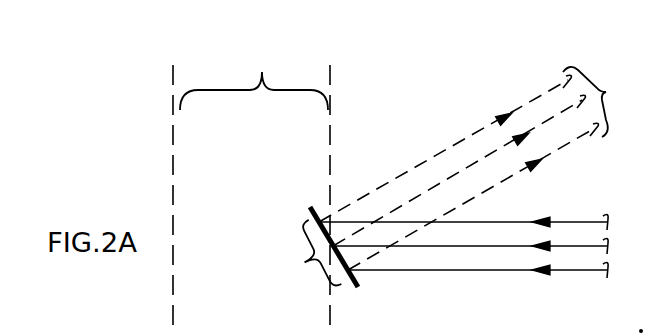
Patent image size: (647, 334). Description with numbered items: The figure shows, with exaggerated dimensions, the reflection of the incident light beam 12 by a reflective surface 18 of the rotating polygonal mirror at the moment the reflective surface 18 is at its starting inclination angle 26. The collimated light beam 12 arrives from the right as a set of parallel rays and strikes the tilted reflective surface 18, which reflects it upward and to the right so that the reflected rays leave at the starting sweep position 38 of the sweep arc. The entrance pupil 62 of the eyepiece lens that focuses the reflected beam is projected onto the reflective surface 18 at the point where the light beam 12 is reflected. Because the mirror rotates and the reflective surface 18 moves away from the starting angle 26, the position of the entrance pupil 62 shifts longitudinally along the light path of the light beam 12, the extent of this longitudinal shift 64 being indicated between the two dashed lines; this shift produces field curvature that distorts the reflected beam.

The light beam 12 is at (560, 235).
The reflective surface 18 is at (312, 208).
The starting inclination angle 26 is at (349, 244).
The starting sweep position 38 is at (477, 168).
The entrance pupil 62 is at (304, 257).
The longitudinal shift 64 is at (251, 190).